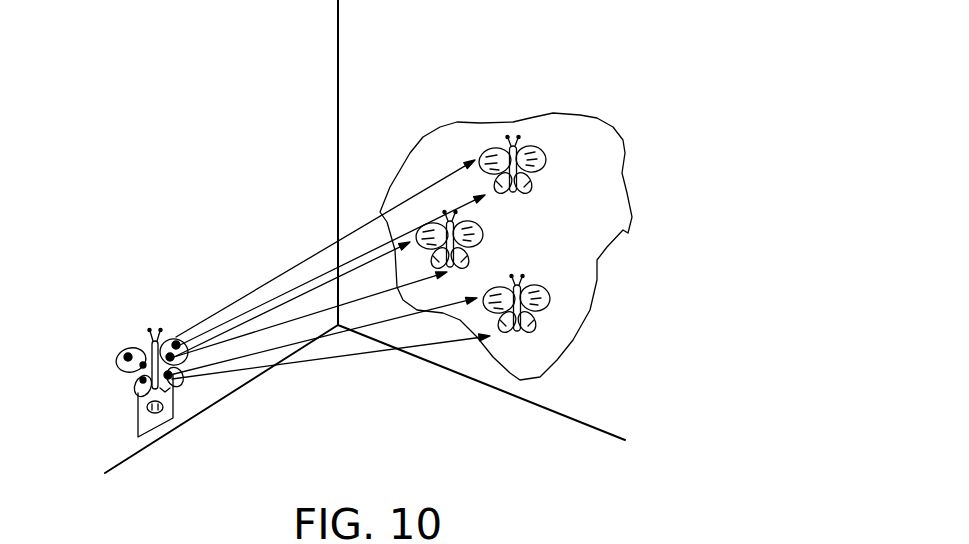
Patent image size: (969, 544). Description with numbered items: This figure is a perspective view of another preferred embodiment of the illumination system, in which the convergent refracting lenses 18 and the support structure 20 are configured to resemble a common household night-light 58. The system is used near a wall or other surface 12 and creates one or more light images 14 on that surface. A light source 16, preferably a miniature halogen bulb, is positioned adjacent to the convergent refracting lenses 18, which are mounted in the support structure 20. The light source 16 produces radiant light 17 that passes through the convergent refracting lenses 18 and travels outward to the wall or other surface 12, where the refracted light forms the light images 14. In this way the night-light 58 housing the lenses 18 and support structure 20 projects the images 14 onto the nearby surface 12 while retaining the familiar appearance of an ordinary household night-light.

The wall or other surface 12 is at (611, 218).
The light images 14 is at (540, 147).
The light source 16 is at (141, 397).
The radiant light 17 is at (305, 262).
The convergent refracting lens 18 is at (142, 355).
The support structure 20 is at (180, 387).
The night-light 58 is at (170, 325).